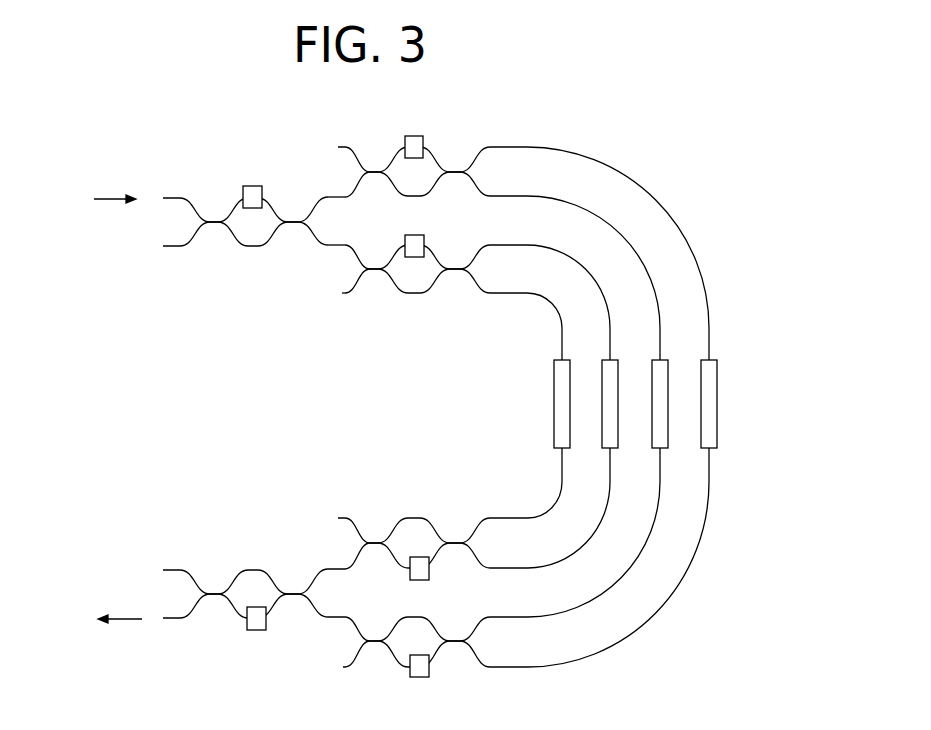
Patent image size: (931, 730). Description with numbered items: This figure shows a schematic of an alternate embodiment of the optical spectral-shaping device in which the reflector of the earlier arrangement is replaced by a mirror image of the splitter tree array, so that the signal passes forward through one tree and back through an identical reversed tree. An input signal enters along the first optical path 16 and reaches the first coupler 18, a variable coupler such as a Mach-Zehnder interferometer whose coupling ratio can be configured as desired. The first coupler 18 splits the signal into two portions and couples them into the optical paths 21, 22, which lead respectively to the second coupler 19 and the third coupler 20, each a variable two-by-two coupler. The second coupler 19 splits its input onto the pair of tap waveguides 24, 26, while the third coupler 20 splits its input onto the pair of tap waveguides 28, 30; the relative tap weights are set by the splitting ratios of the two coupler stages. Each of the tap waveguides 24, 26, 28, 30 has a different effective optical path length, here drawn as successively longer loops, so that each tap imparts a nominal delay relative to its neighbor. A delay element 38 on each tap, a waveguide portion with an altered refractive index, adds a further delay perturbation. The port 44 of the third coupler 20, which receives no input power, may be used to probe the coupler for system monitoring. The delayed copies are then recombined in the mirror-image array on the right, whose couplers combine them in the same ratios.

The first optical path 16 is at (170, 198).
The first coupler 18 is at (268, 185).
The second coupler 19 is at (404, 124).
The third coupler 20 is at (400, 234).
The optical path 21 is at (323, 197).
The optical path 22 is at (315, 248).
The tap waveguide 24 is at (504, 146).
The tap waveguide 26 is at (504, 195).
The tap waveguide 28 is at (504, 244).
The tap waveguide 30 is at (505, 292).
The delay element 38 is at (554, 418).
The port 44 is at (347, 295).